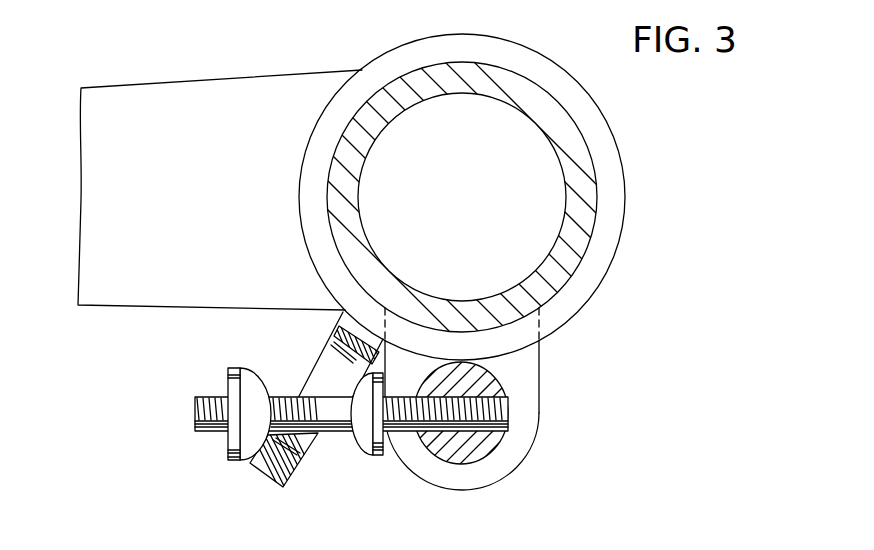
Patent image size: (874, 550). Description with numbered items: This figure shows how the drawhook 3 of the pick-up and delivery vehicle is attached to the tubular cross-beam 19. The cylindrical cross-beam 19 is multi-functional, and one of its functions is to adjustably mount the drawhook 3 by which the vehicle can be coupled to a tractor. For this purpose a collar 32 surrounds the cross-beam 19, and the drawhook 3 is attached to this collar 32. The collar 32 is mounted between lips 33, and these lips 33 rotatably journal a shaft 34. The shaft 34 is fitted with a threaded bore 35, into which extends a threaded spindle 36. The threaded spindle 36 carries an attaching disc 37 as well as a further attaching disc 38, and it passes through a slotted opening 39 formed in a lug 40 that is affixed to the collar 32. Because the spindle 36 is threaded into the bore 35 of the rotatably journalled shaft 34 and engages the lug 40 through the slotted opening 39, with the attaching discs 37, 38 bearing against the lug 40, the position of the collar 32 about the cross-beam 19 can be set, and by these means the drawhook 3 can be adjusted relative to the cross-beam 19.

The drawhook 3 is at (155, 95).
The tubular cross-beam 19 is at (387, 95).
The collar 32 is at (345, 293).
The lips 33 is at (533, 417).
The shaft 34 is at (462, 462).
The threaded bore 35 is at (503, 440).
The threaded spindle 36 is at (423, 433).
The attaching disc 37 is at (362, 447).
The attaching disc 38 is at (248, 457).
The slotted opening 39 is at (309, 468).
The lug 40 is at (277, 481).